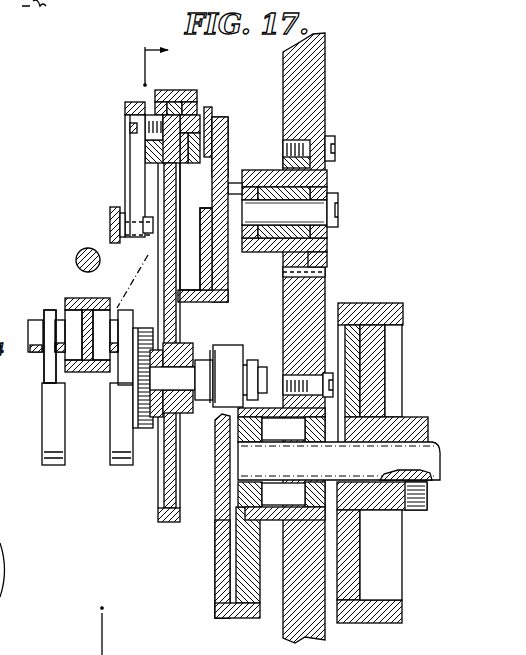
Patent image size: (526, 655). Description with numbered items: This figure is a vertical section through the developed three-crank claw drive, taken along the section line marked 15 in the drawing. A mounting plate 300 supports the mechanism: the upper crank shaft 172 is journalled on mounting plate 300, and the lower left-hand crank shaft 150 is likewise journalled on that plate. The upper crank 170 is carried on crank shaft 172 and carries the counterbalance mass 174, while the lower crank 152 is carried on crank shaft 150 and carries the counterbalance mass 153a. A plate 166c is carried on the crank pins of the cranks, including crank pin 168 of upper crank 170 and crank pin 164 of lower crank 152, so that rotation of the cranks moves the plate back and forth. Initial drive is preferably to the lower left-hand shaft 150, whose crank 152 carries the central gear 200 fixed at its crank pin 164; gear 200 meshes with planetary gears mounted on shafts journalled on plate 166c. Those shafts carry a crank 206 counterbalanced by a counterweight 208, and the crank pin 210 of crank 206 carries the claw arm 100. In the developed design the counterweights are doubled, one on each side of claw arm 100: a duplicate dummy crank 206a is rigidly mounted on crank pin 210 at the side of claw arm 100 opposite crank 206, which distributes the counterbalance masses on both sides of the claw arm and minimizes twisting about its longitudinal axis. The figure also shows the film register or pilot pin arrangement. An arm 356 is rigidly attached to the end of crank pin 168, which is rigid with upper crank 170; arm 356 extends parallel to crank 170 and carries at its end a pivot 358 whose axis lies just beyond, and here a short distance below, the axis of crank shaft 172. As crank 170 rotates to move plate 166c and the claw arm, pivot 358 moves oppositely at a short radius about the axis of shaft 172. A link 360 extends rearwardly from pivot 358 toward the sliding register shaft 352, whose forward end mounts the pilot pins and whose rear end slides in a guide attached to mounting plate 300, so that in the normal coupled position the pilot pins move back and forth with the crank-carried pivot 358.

The section line 15- 15 is at (134, 351).
The mounting plate 300 is at (313, 81).
The upper crank shaft 172 is at (283, 218).
The crank pin 168 is at (200, 107).
The upper crank 170 is at (228, 157).
The counterbalance mass 174 is at (224, 277).
The plate 166c is at (157, 187).
The arm 356 is at (126, 152).
The pivot 358 is at (135, 213).
The sliding register shaft 352 is at (89, 248).
The link 360 is at (127, 281).
The claw arm 100 is at (82, 295).
The crank pin 210 is at (34, 319).
The counterweight 208 is at (43, 418).
The dummy crank 206a is at (43, 375).
The crank 206 is at (124, 370).
The gear 200 is at (143, 430).
The crank pin 164 is at (197, 352).
The crank 152 is at (217, 428).
The counterbalance mass 153a is at (216, 583).
The crank shaft 150 is at (318, 471).